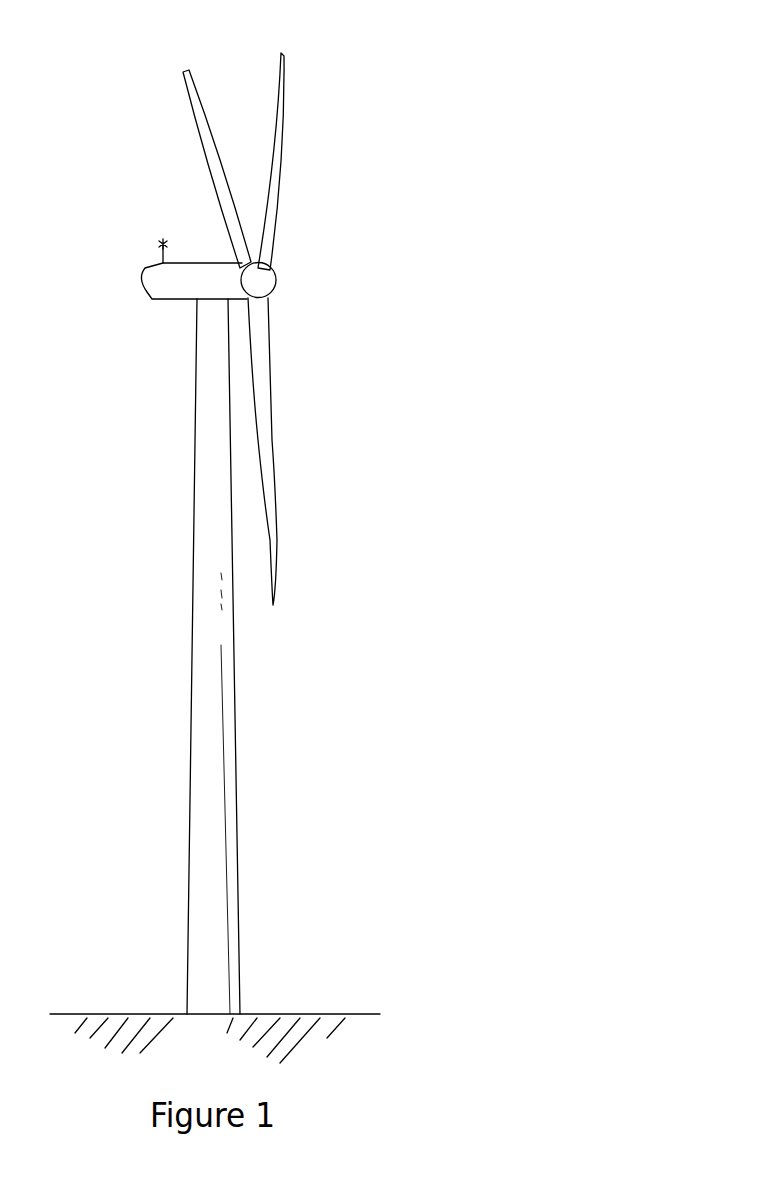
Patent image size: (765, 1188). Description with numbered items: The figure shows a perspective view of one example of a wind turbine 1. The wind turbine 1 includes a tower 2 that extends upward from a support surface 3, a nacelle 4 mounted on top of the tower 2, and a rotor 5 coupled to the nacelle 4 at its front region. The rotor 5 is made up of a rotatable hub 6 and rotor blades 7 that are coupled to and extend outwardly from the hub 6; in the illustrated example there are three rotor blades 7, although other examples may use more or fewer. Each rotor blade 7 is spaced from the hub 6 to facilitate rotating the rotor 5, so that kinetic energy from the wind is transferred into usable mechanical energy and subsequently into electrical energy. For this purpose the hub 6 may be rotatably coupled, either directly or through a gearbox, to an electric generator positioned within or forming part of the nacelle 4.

The wind turbine 1 is at (388, 117).
The tower 2 is at (200, 756).
The support surface 3 is at (126, 1013).
The nacelle 4 is at (173, 303).
The rotor 5 is at (281, 264).
The hub 6 is at (279, 289).
The rotor blade 7 is at (273, 92).